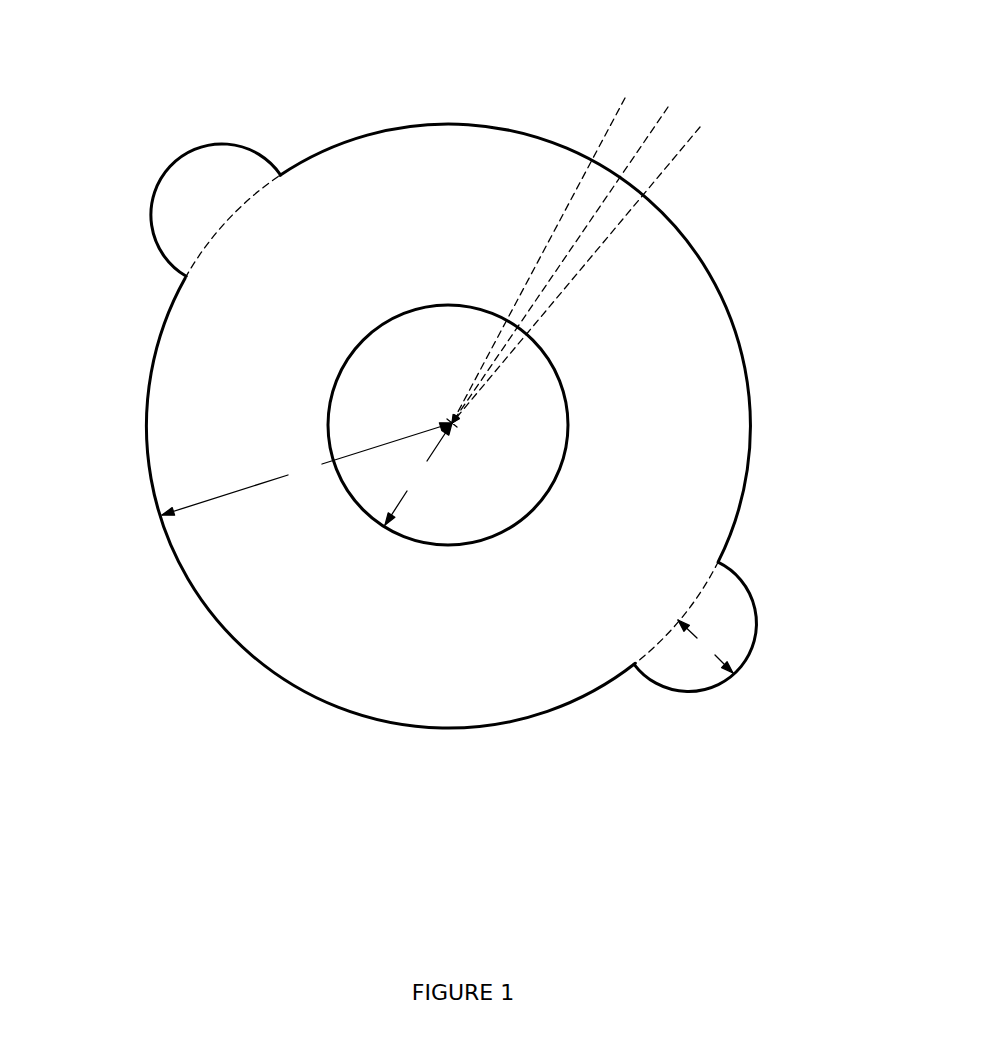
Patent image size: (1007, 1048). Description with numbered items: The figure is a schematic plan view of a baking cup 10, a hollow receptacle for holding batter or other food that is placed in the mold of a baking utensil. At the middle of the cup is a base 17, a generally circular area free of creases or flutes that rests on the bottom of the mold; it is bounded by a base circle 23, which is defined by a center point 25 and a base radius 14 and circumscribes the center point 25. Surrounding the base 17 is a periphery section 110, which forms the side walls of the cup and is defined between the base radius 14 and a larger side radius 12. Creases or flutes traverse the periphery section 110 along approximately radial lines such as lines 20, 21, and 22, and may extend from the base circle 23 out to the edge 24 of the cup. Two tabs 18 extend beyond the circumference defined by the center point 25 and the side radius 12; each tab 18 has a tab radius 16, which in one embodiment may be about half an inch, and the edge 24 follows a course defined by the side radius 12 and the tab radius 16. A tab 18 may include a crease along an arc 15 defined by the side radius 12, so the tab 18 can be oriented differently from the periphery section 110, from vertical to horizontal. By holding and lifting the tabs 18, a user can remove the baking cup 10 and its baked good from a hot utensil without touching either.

The baking cup 10 is at (457, 439).
The periphery section 110 is at (457, 388).
The side radius 12 is at (307, 469).
The base radius 14 is at (418, 474).
The arc 15 is at (212, 237).
The tab radius 16 is at (705, 646).
The base 17 is at (365, 425).
The tab 18 is at (236, 141).
The radial line 20 is at (631, 86).
The radial line 21 is at (676, 95).
The radial line 22 is at (709, 116).
The base circle 23 is at (563, 472).
The edge 24 is at (737, 325).
The center point 25 is at (470, 413).